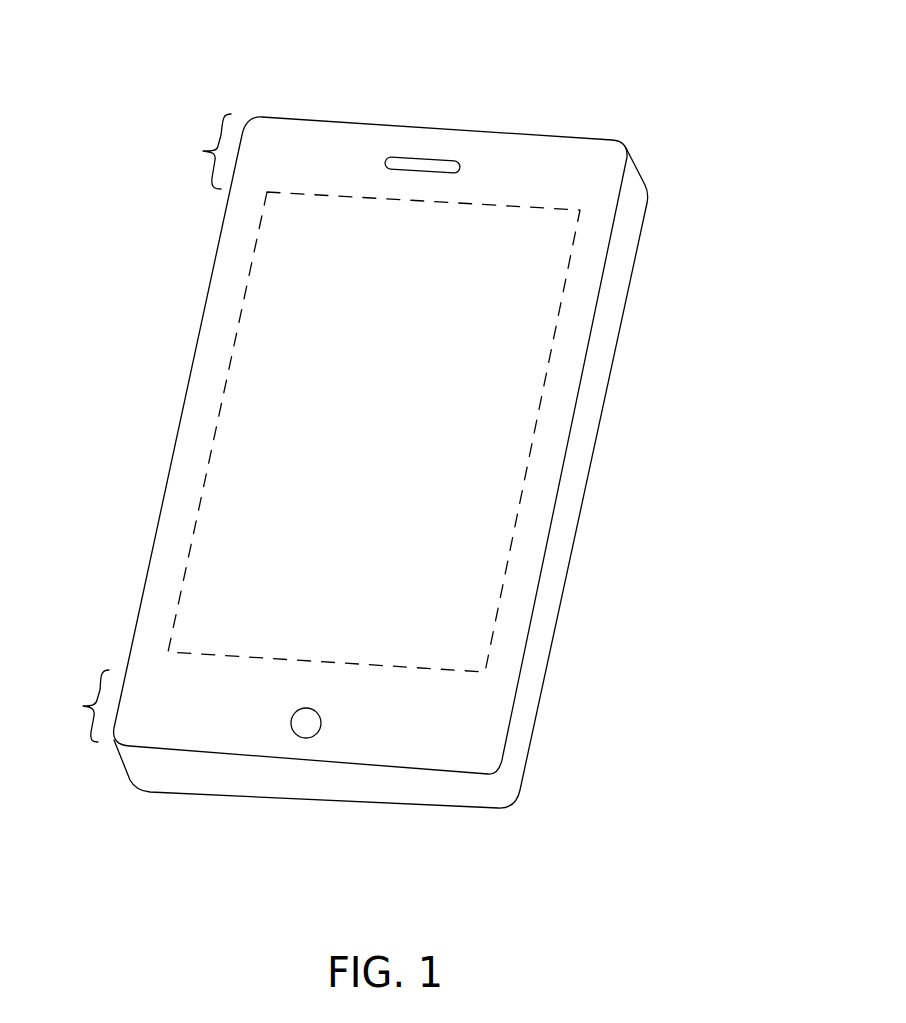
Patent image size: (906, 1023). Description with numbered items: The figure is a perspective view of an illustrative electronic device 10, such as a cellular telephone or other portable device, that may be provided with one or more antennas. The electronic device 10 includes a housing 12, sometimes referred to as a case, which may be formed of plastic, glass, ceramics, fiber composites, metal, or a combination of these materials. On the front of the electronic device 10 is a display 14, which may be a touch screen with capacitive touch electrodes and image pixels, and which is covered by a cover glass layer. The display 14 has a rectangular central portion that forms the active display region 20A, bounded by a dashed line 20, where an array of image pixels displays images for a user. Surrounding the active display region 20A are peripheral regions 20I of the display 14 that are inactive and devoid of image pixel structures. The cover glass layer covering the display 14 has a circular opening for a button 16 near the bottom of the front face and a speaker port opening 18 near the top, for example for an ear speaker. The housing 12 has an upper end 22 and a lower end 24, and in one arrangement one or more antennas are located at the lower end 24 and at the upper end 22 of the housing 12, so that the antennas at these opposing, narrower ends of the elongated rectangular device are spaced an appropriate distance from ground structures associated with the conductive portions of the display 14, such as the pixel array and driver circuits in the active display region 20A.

The electronic device 10 is at (709, 57).
The housing 12 is at (618, 273).
The display 14 is at (518, 425).
The button 16 is at (305, 739).
The speaker port opening 18 is at (417, 160).
The dashed line 20 is at (208, 458).
The active display region 20A is at (222, 547).
The peripheral regions 20I is at (510, 162).
The upper end 22 is at (199, 151).
The lower end 24 is at (78, 706).